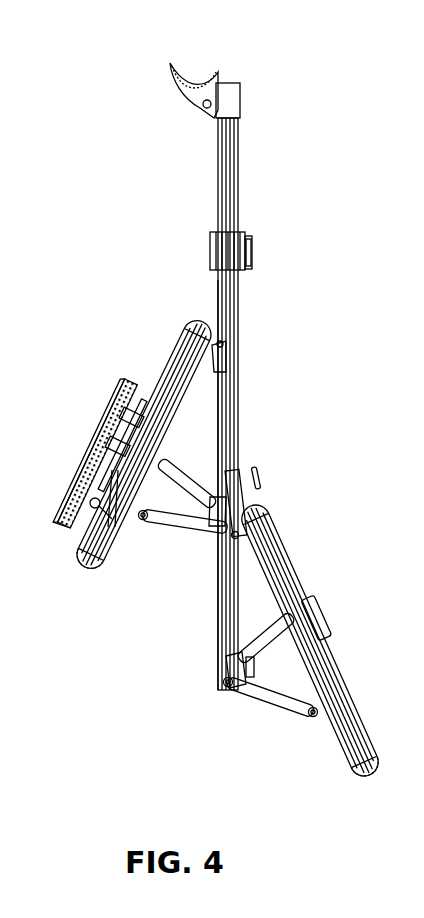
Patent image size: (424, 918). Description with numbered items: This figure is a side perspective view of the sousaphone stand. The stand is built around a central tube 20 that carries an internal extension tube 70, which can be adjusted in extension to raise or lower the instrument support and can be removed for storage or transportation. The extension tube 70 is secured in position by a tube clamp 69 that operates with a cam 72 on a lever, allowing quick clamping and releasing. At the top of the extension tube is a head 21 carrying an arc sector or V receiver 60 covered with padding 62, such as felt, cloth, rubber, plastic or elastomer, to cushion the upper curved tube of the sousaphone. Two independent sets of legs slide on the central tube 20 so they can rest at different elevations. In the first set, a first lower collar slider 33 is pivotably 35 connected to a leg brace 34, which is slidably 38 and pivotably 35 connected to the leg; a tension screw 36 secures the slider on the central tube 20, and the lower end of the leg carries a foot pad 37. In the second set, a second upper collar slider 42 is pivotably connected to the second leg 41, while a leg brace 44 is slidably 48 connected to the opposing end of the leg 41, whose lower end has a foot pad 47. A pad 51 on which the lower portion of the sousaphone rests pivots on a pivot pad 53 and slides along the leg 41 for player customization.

The central tube 20 is at (240, 345).
The head 21 is at (244, 106).
The first lower collar slider 33 is at (228, 668).
The leg brace 34 is at (250, 700).
The pivot connection 35 is at (310, 716).
The tension screw 36 is at (224, 682).
The foot pad 37 is at (362, 786).
The slidable connection 38 is at (333, 720).
The second leg 41 is at (186, 322).
The second upper collar slider 42 is at (228, 352).
The leg brace 44 is at (191, 531).
The foot pad 47 is at (80, 582).
The slidable connection 48 is at (137, 522).
The pad 51 is at (118, 401).
The pivot pad 53 is at (105, 452).
The arc sector receiver 60 is at (186, 94).
The padding 62 is at (185, 73).
The tube clamp 69 is at (208, 246).
The extension tube 70 is at (236, 176).
The cam 72 is at (253, 246).